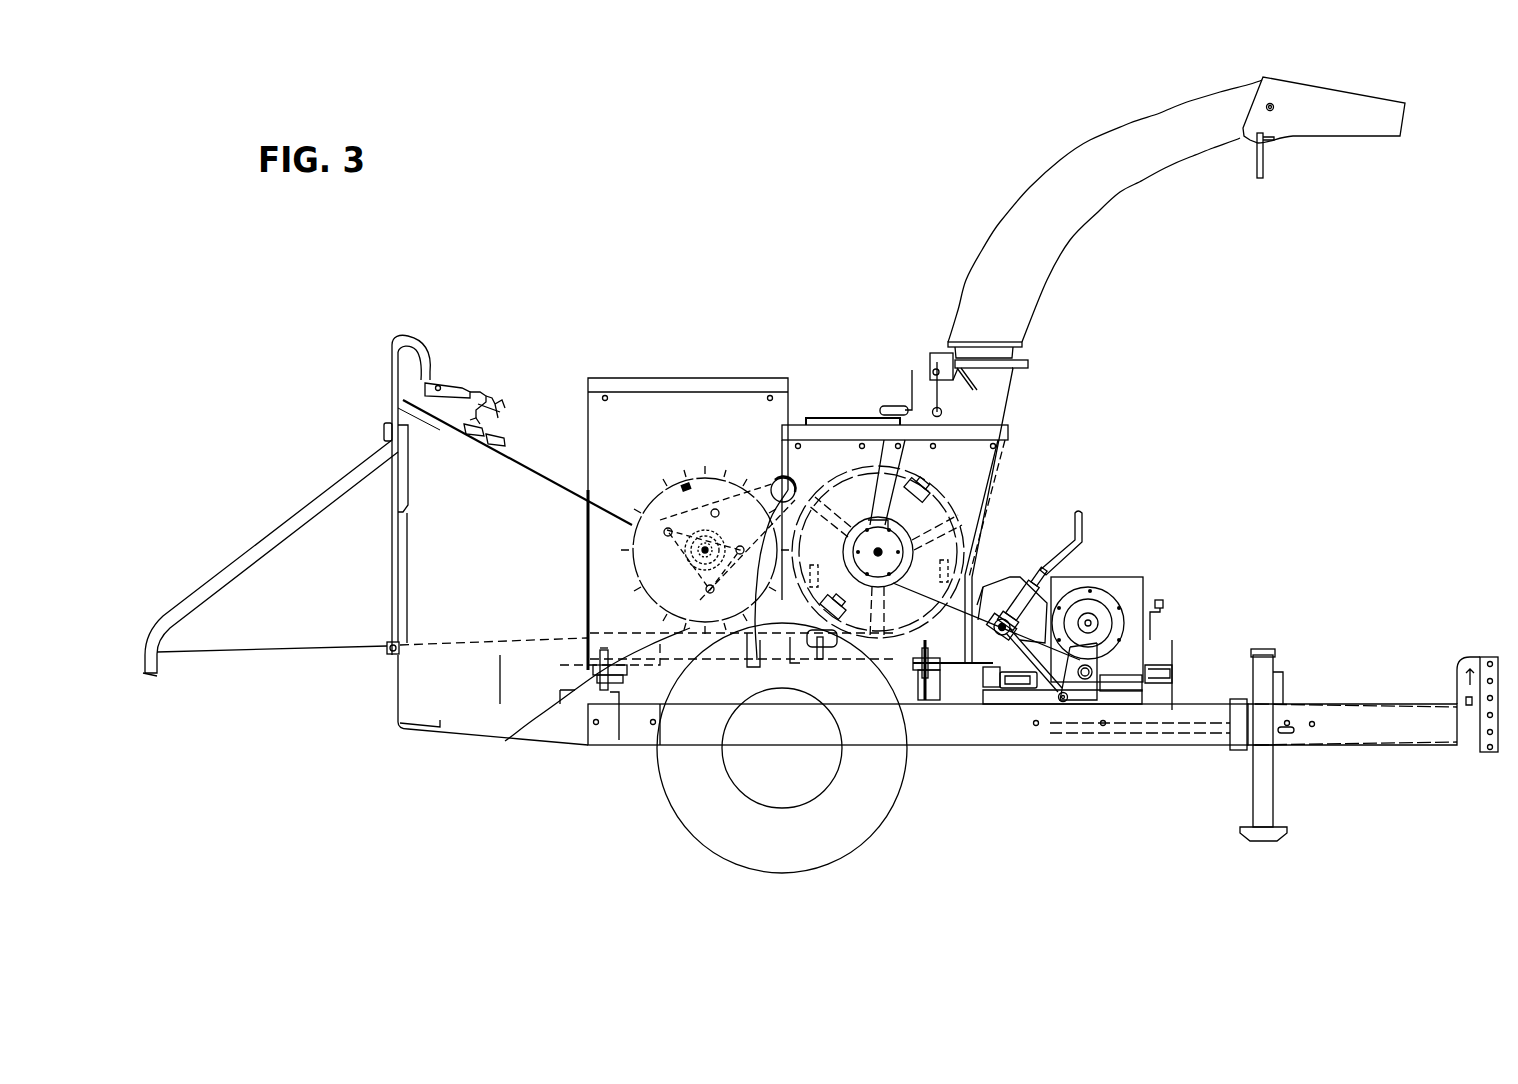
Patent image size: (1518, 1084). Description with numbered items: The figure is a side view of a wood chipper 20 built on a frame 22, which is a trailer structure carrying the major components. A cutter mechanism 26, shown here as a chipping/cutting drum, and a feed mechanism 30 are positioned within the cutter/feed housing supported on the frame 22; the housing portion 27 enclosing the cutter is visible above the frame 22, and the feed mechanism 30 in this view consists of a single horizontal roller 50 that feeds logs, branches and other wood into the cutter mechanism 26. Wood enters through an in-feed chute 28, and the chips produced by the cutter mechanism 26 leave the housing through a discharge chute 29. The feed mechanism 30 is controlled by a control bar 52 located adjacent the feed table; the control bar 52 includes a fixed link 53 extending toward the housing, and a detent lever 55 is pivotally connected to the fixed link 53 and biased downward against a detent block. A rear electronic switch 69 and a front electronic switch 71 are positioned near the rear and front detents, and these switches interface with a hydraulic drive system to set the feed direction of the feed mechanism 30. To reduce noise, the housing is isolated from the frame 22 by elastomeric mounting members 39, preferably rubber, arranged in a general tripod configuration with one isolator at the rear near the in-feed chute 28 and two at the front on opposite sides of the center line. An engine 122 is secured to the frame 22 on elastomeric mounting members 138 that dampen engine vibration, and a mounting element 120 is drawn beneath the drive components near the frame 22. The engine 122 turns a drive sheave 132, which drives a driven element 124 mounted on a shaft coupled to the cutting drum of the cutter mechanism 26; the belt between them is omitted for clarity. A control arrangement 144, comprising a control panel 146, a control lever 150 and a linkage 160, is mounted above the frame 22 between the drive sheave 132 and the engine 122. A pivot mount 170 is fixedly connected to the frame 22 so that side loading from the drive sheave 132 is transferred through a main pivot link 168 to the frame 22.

The wood chipper 20 is at (789, 290).
The frame 22 is at (1033, 744).
The cutter mechanism 26 is at (942, 487).
The cutting mechanism housing 27 is at (790, 424).
The in-feed chute 28 is at (528, 468).
The discharge chute 29 is at (1083, 145).
The feed mechanism 30 is at (650, 504).
The elastomeric mounting members 39 is at (600, 673).
The horizontal roller 50 is at (686, 488).
The control bar 52 is at (392, 344).
The fixed link 53 is at (431, 352).
The detent lever 55 is at (478, 395).
The rear electronic switch 69 is at (468, 433).
The front electronic switch 71 is at (490, 444).
The mounting pad 120 is at (1019, 688).
The engine 122 is at (1142, 576).
The driven element 124 is at (860, 573).
The drive sheave 132 is at (1102, 623).
The elastomeric mounting members 138 is at (1162, 672).
The control arrangement 144 is at (1037, 556).
The control panel 146 is at (1000, 577).
The control lever 150 is at (1082, 528).
The linkage 160 is at (1000, 652).
The main pivot link 168 is at (1078, 694).
The pivot mount 170 is at (1101, 695).